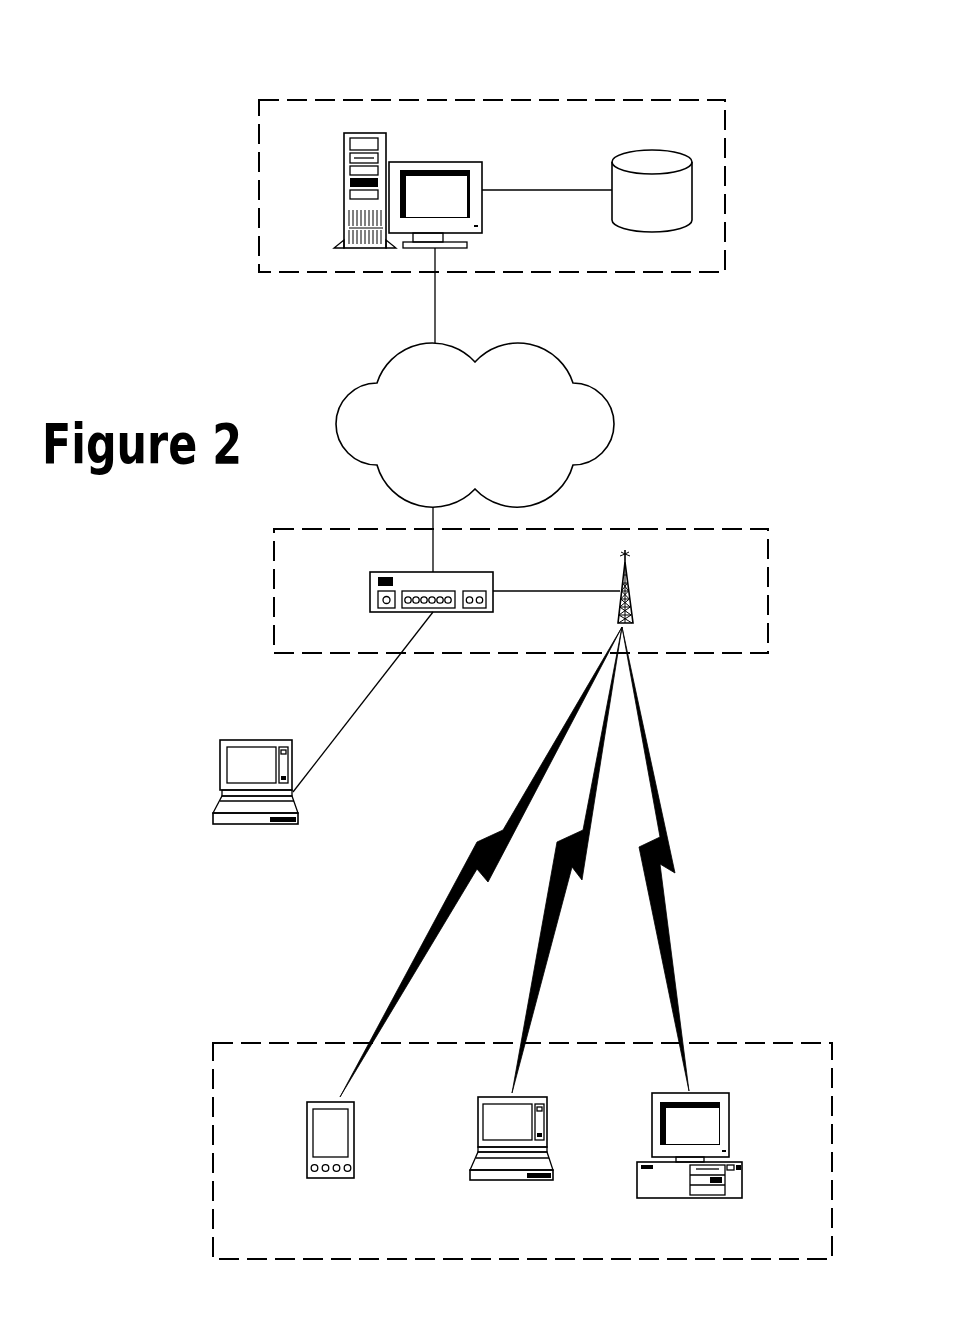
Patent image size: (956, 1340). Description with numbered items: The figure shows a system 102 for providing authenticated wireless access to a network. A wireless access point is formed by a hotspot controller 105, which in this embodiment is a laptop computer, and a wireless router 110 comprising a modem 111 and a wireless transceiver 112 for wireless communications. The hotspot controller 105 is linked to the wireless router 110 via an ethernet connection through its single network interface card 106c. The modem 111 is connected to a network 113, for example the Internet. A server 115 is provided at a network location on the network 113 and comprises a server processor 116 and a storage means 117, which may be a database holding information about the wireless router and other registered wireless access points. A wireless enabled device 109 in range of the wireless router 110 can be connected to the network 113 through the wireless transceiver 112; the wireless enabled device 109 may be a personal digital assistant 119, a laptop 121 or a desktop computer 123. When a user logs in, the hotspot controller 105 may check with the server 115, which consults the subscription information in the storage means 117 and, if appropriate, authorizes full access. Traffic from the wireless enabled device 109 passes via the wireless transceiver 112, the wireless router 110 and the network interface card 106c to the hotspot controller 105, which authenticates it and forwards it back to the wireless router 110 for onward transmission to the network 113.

The system 102 is at (132, 45).
The hotspot controller 105 is at (227, 770).
The network interface card 106c is at (295, 795).
The wireless enabled device 109 is at (212, 1053).
The wireless router 110 is at (272, 595).
The modem 111 is at (370, 590).
The wireless transceiver 112 is at (632, 588).
The network 113 is at (387, 367).
The server 115 is at (258, 155).
The server processor 116 is at (344, 188).
The storage means 117 is at (612, 167).
The personal digital assistant 119 is at (329, 1178).
The laptop 121 is at (507, 1180).
The desktop computer 123 is at (690, 1198).